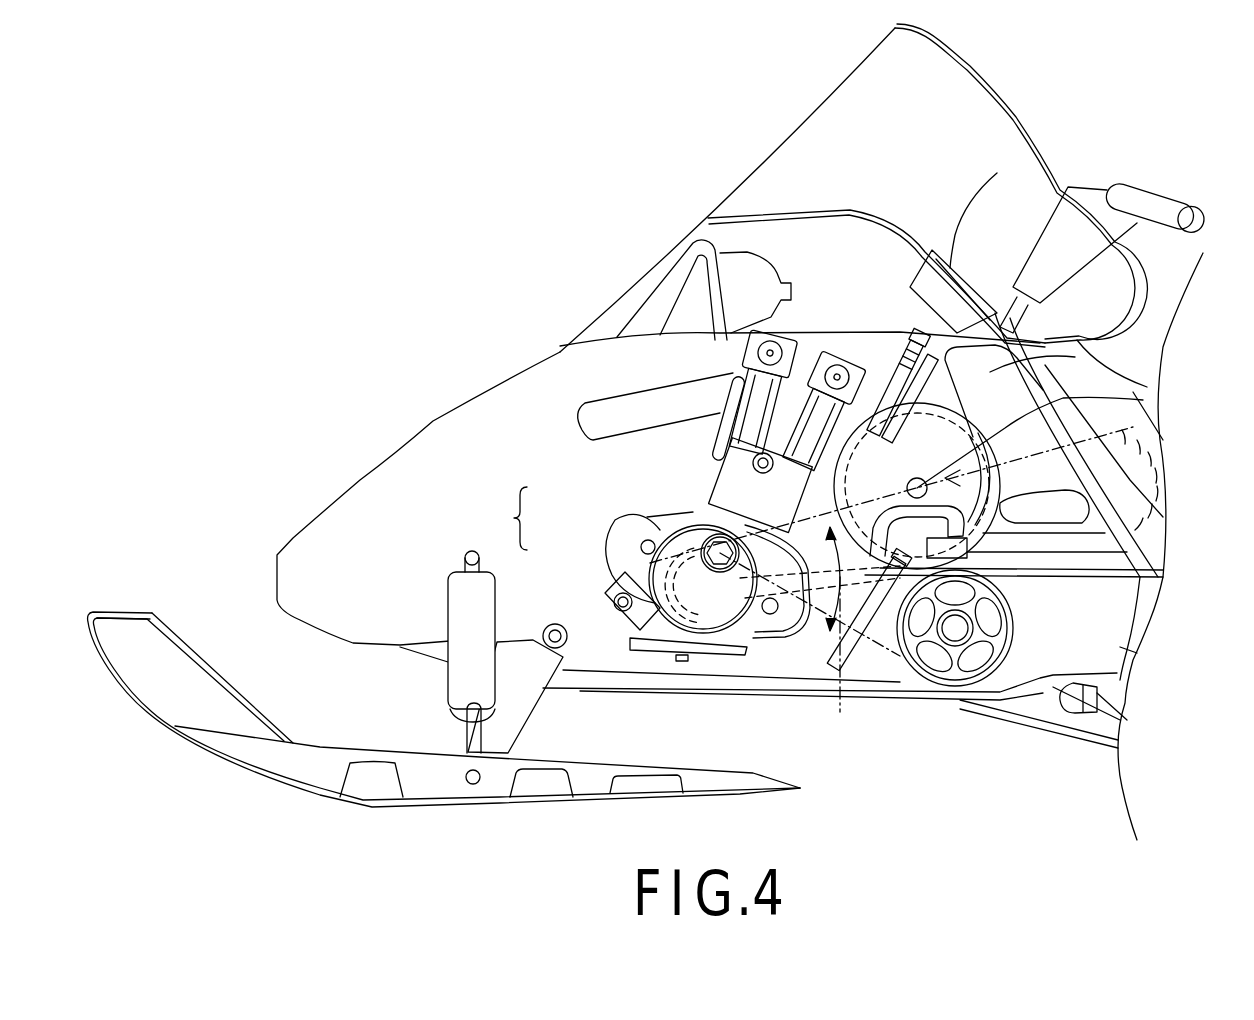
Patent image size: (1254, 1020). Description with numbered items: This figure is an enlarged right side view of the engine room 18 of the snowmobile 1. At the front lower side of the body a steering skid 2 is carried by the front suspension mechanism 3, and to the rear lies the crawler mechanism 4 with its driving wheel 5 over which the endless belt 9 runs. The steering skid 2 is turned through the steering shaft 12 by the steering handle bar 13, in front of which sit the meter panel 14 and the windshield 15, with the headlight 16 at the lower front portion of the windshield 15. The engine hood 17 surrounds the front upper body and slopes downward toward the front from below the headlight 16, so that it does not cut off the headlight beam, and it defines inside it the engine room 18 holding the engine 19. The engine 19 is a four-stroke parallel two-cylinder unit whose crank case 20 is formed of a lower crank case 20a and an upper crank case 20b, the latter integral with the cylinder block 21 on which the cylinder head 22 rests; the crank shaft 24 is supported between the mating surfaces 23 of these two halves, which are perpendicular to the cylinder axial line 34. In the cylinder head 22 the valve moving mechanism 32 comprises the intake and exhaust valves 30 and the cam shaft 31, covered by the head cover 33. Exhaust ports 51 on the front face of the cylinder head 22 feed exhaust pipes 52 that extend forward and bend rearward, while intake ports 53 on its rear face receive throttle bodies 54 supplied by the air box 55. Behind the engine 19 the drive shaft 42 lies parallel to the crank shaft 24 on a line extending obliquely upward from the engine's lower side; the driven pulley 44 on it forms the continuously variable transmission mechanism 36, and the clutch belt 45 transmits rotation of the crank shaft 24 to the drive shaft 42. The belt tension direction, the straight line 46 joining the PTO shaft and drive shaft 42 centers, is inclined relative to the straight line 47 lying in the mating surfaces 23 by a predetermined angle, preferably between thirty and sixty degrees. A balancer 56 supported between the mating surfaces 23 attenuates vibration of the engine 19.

The snowmobile 1 is at (565, 160).
The steering skid 2 is at (285, 767).
The front suspension mechanism 3 is at (458, 678).
The crawler mechanism 4 is at (1040, 728).
The driving wheel 5 is at (977, 660).
The endless belt 9 is at (1080, 733).
The steering shaft 12 is at (1010, 300).
The steering handle bar 13 is at (1150, 200).
The meter panel 14 is at (997, 173).
The windshield 15 is at (785, 145).
The headlight 16 is at (657, 303).
The engine hood 17 is at (558, 350).
The engine room 18 is at (449, 470).
The engine 19 is at (737, 357).
The crank case 20 is at (504, 518).
The lower crank case 20a is at (607, 537).
The upper crank case 20b is at (627, 518).
The cylinder block 21 is at (707, 500).
The cylinder head 22 is at (823, 453).
The mating surfaces 23 is at (790, 630).
The crank shaft 24 is at (727, 640).
The intake and exhaust valves 30 is at (747, 387).
The cam shaft 31 is at (777, 313).
The valve moving mechanism 32 is at (813, 350).
The head cover 33 is at (877, 350).
The cylinder axial line 34 is at (720, 553).
The continuously variable transmission mechanism 36 is at (1010, 505).
The drive shaft 42 is at (1143, 400).
The driven pulley 44 is at (1050, 515).
The clutch belt 45 is at (890, 555).
The straight line connecting PTO shaft and drive shaft centers 46 is at (1133, 427).
The straight line included in the mating surfaces 47 is at (810, 650).
The exhaust port 51 is at (740, 420).
The exhaust pipe 52 is at (610, 397).
The intake port 53 is at (850, 350).
The throttle body 54 is at (925, 347).
The air box 55 is at (1090, 358).
The balancer 56 is at (643, 533).